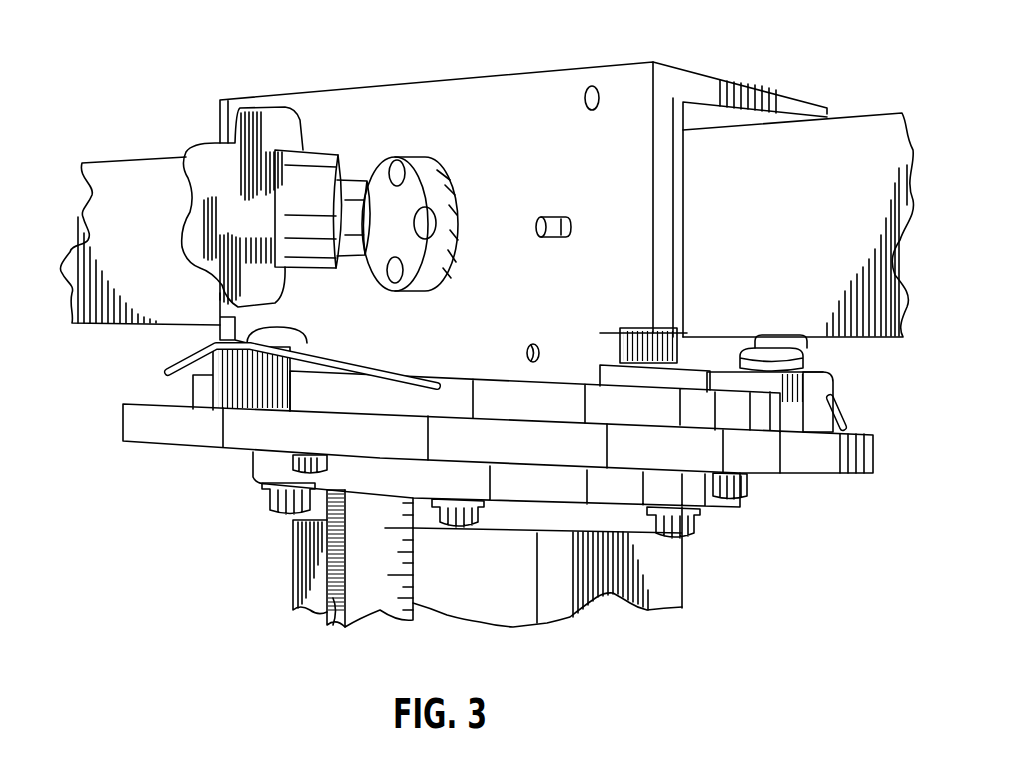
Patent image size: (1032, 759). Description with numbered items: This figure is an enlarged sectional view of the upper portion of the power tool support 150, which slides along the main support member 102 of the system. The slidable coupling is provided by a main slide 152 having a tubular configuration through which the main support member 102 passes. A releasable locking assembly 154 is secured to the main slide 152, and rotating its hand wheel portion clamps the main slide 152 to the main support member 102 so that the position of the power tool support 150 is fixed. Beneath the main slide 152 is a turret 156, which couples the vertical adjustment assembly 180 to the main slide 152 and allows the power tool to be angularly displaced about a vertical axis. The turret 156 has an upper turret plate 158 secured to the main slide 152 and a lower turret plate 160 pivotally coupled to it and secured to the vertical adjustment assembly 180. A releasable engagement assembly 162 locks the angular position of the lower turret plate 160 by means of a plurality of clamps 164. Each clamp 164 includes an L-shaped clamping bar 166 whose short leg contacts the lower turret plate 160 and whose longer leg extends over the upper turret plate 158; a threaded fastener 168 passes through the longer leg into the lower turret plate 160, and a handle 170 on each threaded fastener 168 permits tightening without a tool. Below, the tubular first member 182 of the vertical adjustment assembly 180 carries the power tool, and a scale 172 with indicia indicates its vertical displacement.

The main support member 102 is at (840, 140).
The power tool support 150 is at (181, 106).
The main slide 152 is at (520, 97).
The releasable locking assembly 154 is at (280, 133).
The turret 156 is at (107, 428).
The upper turret plate 158 is at (733, 417).
The lower turret plate 160 is at (750, 462).
The releasable engagement assembly 162 is at (853, 384).
The clamp 164 is at (868, 424).
The clamping bar 166 is at (253, 397).
The threaded fastener 168 is at (293, 325).
The handle 170 is at (175, 356).
The scale 172 is at (330, 625).
The vertical adjustment assembly 180 is at (280, 578).
The first member 182 is at (673, 589).